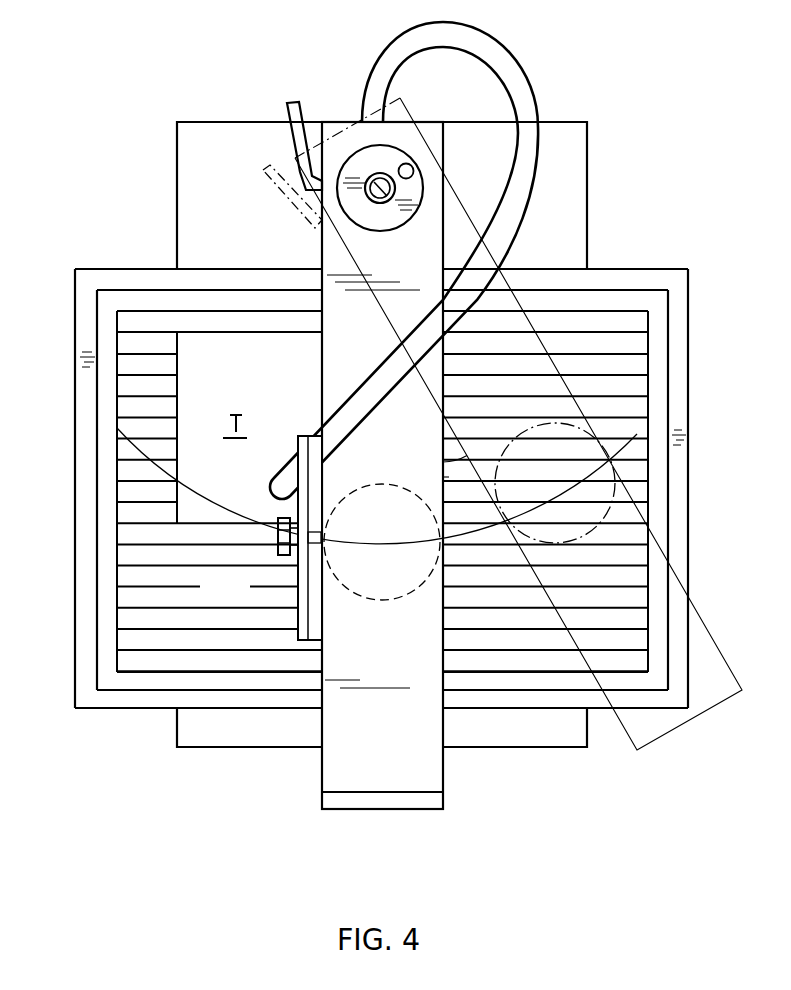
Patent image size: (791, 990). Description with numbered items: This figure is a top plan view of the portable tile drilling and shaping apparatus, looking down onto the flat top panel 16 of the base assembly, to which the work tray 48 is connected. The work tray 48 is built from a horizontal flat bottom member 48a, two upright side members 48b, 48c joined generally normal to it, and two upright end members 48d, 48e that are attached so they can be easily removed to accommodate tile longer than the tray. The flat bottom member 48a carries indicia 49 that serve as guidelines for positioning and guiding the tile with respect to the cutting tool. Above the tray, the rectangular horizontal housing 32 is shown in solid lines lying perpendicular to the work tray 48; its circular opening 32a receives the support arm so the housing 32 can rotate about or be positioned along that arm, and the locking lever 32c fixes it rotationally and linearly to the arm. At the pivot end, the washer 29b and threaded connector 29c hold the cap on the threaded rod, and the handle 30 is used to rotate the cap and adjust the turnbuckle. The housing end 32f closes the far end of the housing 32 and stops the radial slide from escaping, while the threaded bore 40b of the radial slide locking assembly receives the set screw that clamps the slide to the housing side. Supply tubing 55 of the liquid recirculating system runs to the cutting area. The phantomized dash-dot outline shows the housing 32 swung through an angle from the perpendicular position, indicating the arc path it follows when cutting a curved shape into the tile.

The flat top panel 16 is at (550, 730).
The washer 29b is at (388, 173).
The threaded connector 29c is at (372, 177).
The handle 30 is at (413, 167).
The horizontal housing 32 is at (503, 463).
The circular opening 32a is at (315, 115).
The locking lever 32c is at (293, 138).
The housing end 32f is at (443, 800).
The threaded bore 40b is at (285, 531).
The work tray 48 is at (383, 500).
The flat bottom member 48a is at (421, 527).
The side member 48b is at (133, 269).
The side member 48c is at (235, 697).
The end member 48d is at (85, 552).
The end member 48e is at (678, 524).
The indicia 49 is at (618, 373).
The supply tubing 55 is at (530, 72).